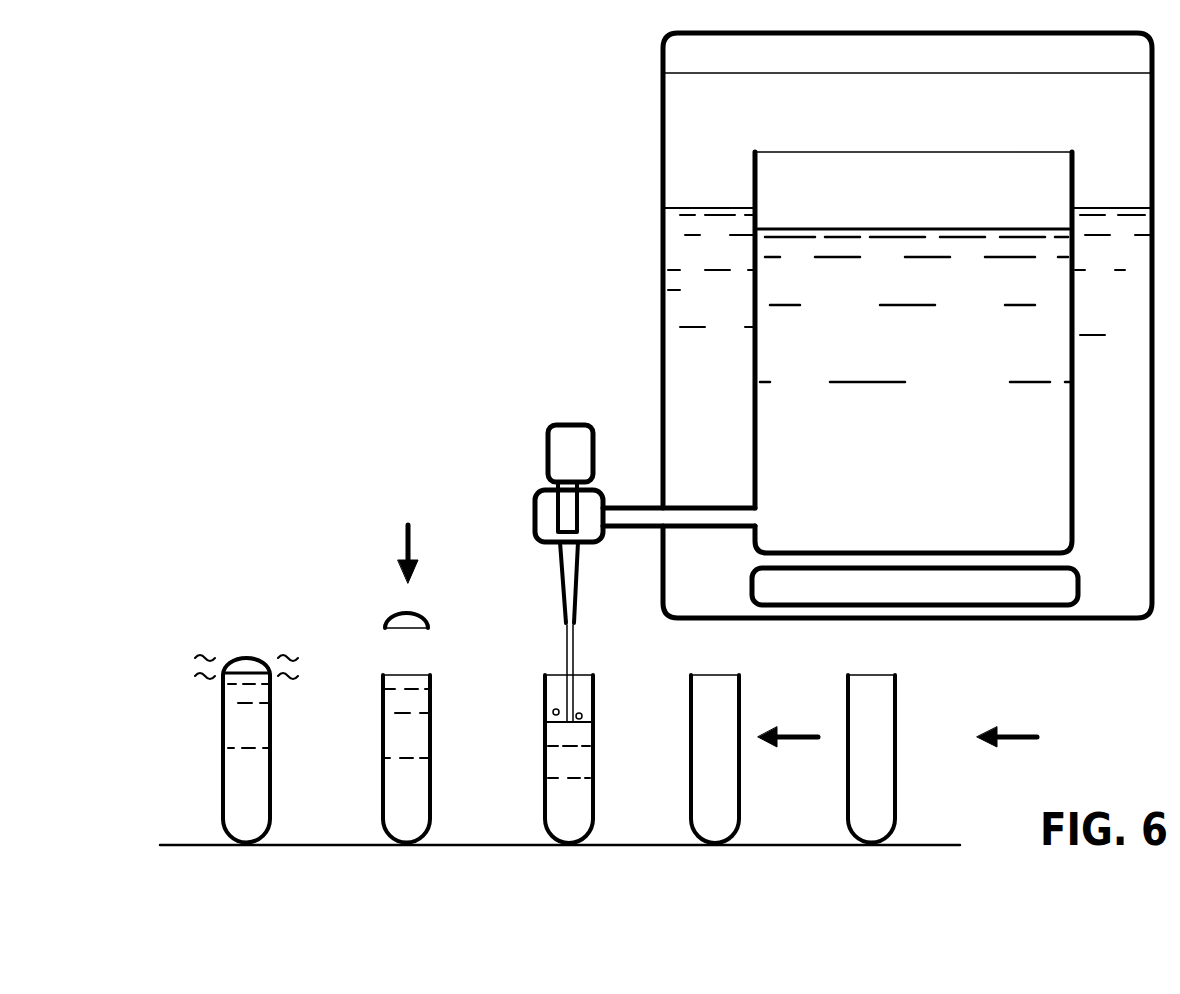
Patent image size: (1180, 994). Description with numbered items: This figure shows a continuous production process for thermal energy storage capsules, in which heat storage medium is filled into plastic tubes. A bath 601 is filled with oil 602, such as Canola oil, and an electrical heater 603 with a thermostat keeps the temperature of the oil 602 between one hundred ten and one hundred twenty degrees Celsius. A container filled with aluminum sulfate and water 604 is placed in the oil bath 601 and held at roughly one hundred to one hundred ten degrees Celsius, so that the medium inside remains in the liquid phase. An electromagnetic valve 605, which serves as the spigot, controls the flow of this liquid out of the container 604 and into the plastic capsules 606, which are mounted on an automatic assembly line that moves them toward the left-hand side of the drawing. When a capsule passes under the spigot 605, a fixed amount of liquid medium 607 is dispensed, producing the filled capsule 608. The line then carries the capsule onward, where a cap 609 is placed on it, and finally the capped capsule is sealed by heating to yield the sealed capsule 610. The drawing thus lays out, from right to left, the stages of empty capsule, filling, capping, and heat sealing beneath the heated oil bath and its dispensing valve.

The bath 601 is at (660, 122).
The oil 602 is at (660, 288).
The electrical heater 603 is at (1007, 585).
The container filled with aluminum sulfate and water 604 is at (915, 360).
The electromagnetic valve 605 is at (557, 425).
The plastic capsules 606 is at (868, 760).
The liquid medium 607 is at (558, 642).
The filled capsule 608 is at (566, 770).
The cap 609 is at (398, 610).
The sealed capsule 610 is at (245, 655).